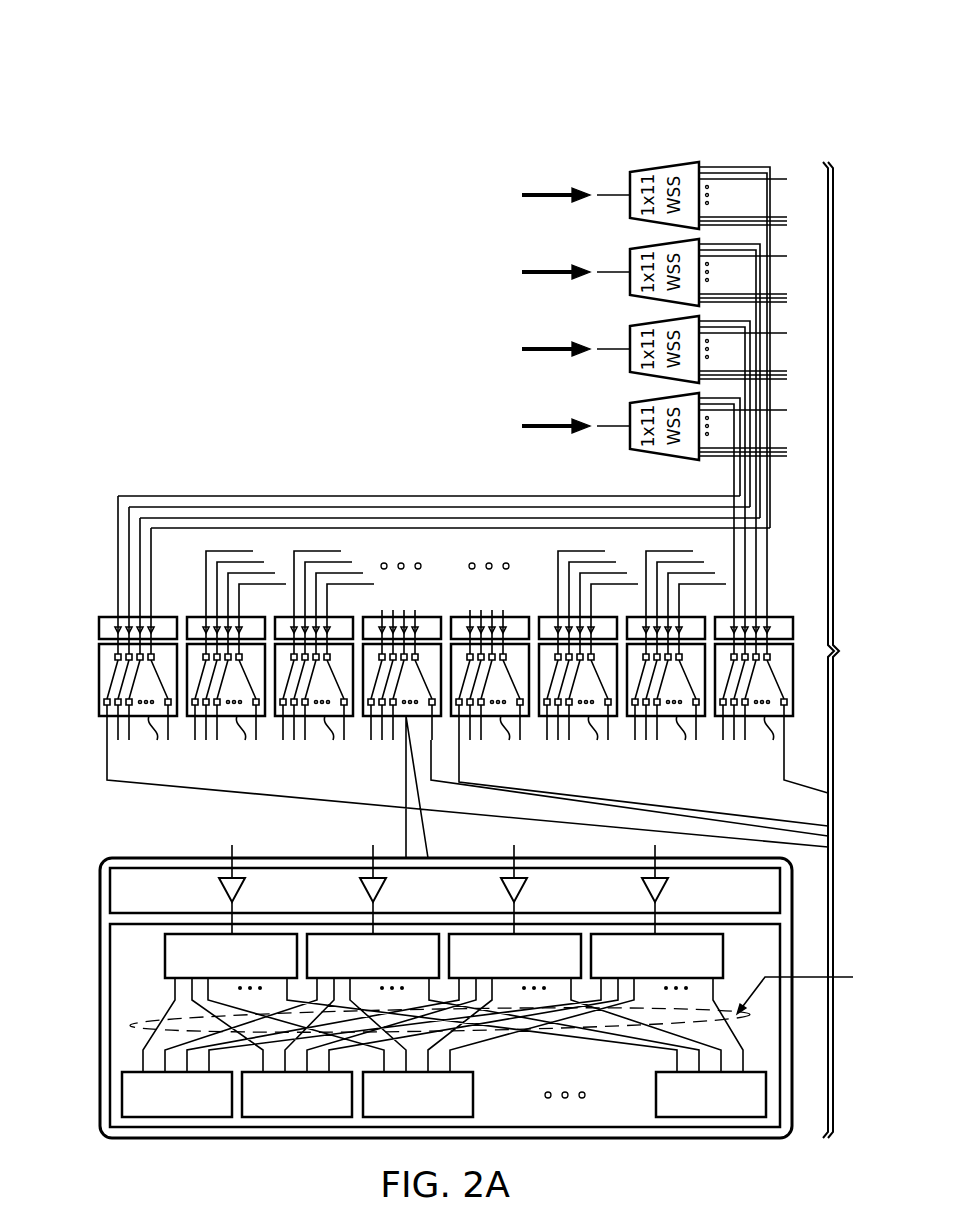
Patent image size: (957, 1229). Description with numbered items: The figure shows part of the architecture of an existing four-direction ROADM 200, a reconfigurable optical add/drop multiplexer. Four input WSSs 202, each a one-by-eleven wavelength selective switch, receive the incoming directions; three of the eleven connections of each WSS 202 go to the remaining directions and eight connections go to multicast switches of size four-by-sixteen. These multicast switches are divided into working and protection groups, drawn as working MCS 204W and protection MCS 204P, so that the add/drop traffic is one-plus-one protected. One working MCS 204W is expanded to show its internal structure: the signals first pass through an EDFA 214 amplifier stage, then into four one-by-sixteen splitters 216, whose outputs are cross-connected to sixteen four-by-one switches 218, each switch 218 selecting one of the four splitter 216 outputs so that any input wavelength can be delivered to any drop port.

The ROADM 200 is at (283, 52).
The input WSS 202 is at (630, 180).
The working MCS 204W is at (618, 1162).
The protection MCS 204P is at (639, 721).
The EDFA 214 is at (110, 890).
The 1×16 splitter 216 is at (165, 955).
The 4×1 switch 218 is at (122, 1093).